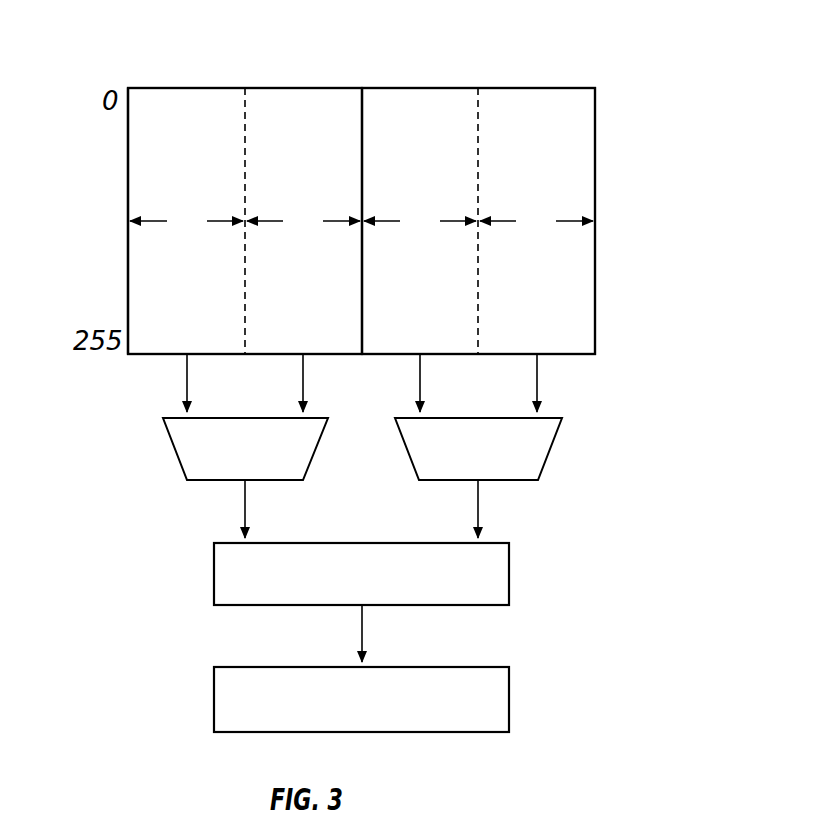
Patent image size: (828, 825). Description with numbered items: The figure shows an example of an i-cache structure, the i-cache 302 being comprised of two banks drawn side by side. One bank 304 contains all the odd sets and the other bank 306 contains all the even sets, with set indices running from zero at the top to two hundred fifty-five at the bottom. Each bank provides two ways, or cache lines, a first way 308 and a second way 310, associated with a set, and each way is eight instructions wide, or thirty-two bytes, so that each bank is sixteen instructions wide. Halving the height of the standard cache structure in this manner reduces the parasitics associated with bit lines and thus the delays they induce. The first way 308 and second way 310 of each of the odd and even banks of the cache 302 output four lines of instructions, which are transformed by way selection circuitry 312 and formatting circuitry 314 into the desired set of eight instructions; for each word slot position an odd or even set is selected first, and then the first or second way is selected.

The i-cache 302 is at (642, 151).
The odd bank 304 is at (146, 70).
The even bank 306 is at (576, 70).
The way 0 308 is at (210, 334).
The way 1 310 is at (323, 334).
The way selection circuitry 312 is at (265, 463).
The formatting circuitry 314 is at (416, 707).